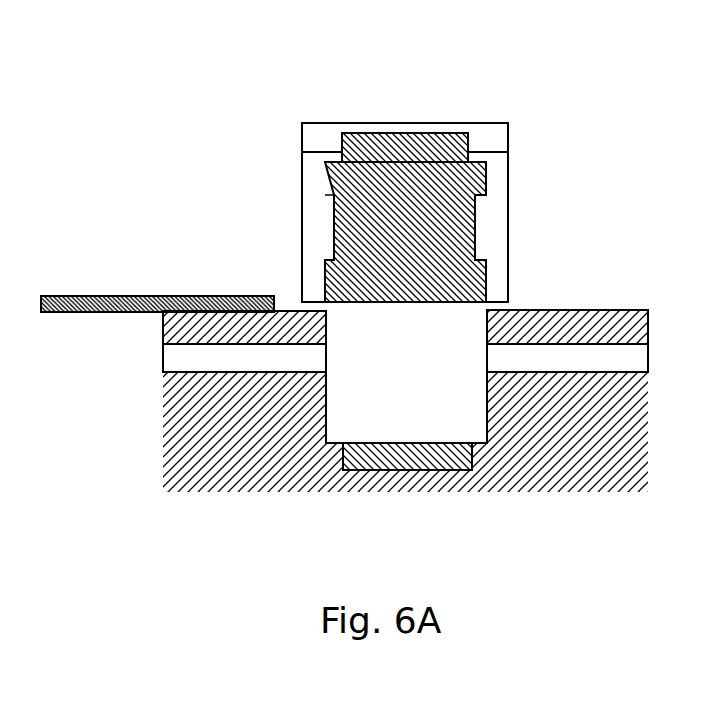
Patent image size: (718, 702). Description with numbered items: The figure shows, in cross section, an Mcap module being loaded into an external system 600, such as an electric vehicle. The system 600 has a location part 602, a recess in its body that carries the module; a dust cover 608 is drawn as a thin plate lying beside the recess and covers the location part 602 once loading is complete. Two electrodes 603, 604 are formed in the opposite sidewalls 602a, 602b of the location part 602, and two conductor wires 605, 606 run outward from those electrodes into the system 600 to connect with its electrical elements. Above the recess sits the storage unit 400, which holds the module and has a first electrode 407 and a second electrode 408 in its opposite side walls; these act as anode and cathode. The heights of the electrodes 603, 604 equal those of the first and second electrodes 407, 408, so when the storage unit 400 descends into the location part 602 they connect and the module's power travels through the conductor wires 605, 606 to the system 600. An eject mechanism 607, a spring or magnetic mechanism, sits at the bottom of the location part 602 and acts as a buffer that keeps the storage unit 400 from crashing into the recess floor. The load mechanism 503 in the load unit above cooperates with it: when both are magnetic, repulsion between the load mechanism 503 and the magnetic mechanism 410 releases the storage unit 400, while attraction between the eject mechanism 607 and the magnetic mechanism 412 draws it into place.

The storage unit 400 is at (477, 177).
The first electrode 407 is at (332, 227).
The second electrode 408 is at (483, 225).
The magnetic mechanism 410 is at (402, 160).
The magnetic mechanism 412 is at (407, 300).
The load mechanism 503 is at (447, 142).
The system 600 is at (187, 438).
The location part 602 is at (333, 428).
The sidewall 602a is at (327, 325).
The sidewall 602b is at (486, 327).
The electrode 603 is at (327, 360).
The electrode 604 is at (484, 357).
The conductor wire 605 is at (177, 363).
The conductor wire 606 is at (578, 355).
The eject mechanism 607 is at (370, 458).
The dust cover 608 is at (97, 298).